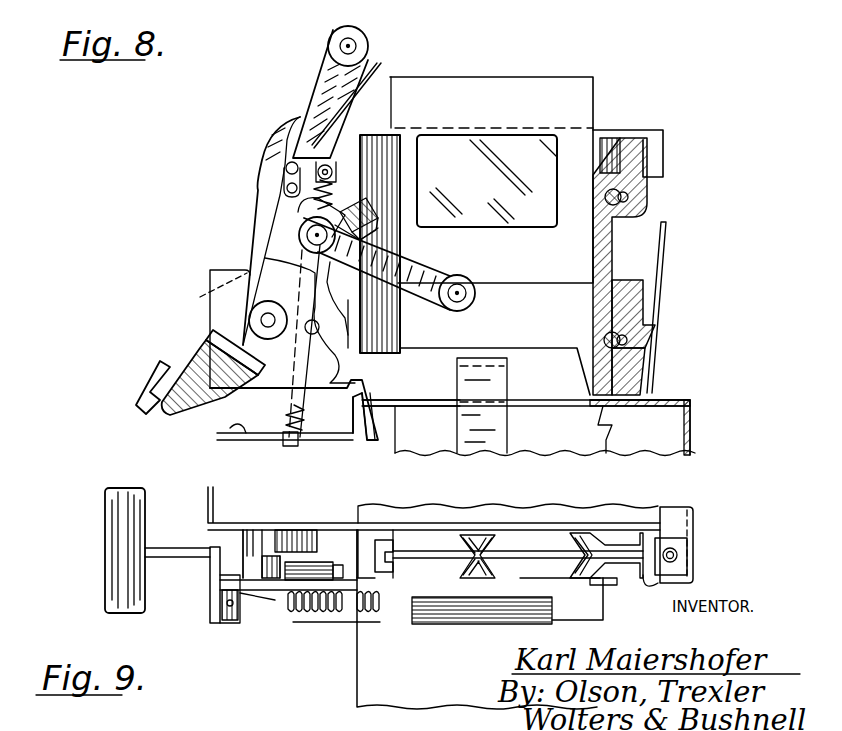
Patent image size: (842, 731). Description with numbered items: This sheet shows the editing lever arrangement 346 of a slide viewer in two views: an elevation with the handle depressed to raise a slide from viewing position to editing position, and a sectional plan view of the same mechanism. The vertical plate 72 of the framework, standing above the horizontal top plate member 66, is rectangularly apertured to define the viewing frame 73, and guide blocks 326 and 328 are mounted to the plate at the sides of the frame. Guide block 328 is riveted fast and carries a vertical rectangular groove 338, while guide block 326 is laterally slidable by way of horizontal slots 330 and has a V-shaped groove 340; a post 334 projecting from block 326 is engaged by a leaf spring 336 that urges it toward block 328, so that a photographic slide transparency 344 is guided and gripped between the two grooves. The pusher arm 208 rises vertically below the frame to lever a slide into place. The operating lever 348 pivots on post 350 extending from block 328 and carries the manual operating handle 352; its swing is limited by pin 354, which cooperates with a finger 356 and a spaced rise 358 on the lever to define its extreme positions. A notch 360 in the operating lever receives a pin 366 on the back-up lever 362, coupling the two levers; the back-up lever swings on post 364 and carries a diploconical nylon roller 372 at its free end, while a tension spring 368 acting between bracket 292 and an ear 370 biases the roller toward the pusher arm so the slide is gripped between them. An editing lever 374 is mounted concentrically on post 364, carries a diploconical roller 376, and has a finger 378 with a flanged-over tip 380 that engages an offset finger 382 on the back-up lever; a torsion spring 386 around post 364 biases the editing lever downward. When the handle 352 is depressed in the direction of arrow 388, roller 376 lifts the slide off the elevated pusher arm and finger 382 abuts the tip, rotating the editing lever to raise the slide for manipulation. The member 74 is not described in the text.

In FIG. 9, the horizontal top plate member 66 is at (380, 661).
In FIG. 9, the vertical plate 72 is at (655, 505).
In FIG. 8, the viewing frame 73 is at (515, 347).
In FIG. 9, the frame member 74 is at (541, 506).
In FIG. 8, the pusher arm 208 is at (498, 383).
In FIG. 8, the bracket 292 is at (225, 430).
In FIG. 9, the bracket 292 is at (336, 622).
In FIG. 8, the guide block 326 is at (645, 152).
In FIG. 9, the guide block 326 is at (662, 549).
In FIG. 8, the guide block 328 is at (375, 151).
In FIG. 9, the guide block 328 is at (356, 525).
In FIG. 8, the horizontal slots 330 is at (624, 197).
In FIG. 8, the post 334 is at (614, 262).
In FIG. 8, the leaf spring 336 is at (668, 230).
In FIG. 9, the leaf spring 336 is at (662, 584).
In FIG. 9, the vertical rectangular groove 338 is at (392, 540).
In FIG. 9, the vertical V-shaped groove 340 is at (482, 624).
In FIG. 8, the photographic slide transparency 344 is at (612, 62).
In FIG. 9, the photographic slide transparency 344 is at (540, 553).
In FIG. 8, the editing lever arrangement 346 is at (262, 155).
In FIG. 8, the operating lever 348 is at (262, 228).
In FIG. 9, the operating lever 348 is at (252, 590).
In FIG. 8, the post 350 is at (205, 298).
In FIG. 9, the post 350 is at (246, 530).
In FIG. 8, the manual operating handle 352 is at (150, 360).
In FIG. 9, the manual operating handle 352 is at (112, 513).
In FIG. 8, the pin 354 is at (350, 376).
In FIG. 8, the finger 356 is at (345, 393).
In FIG. 8, the rise 358 is at (262, 258).
In FIG. 8, the notch 360 is at (268, 177).
In FIG. 8, the back-up lever 362 is at (322, 78).
In FIG. 9, the back-up lever 362 is at (588, 582).
In FIG. 9, the post 364 is at (262, 550).
In FIG. 8, the pin 366 is at (300, 138).
In FIG. 8, the tension spring 368 is at (334, 250).
In FIG. 9, the tension spring 368 is at (312, 610).
In FIG. 8, the ear 370 is at (363, 99).
In FIG. 8, the diploconical nylon roller 372 is at (330, 35).
In FIG. 9, the diploconical nylon roller 372 is at (480, 540).
In FIG. 8, the editing lever 374 is at (421, 300).
In FIG. 9, the editing lever 374 is at (362, 540).
In FIG. 8, the diploconical roller 376 is at (468, 286).
In FIG. 8, the finger 378 is at (340, 215).
In FIG. 8, the flanged-over tip 380 is at (370, 206).
In FIG. 8, the offset finger 382 is at (370, 241).
In FIG. 9, the torsion spring 386 is at (314, 556).
In FIG. 8, the arrow 388 is at (135, 396).